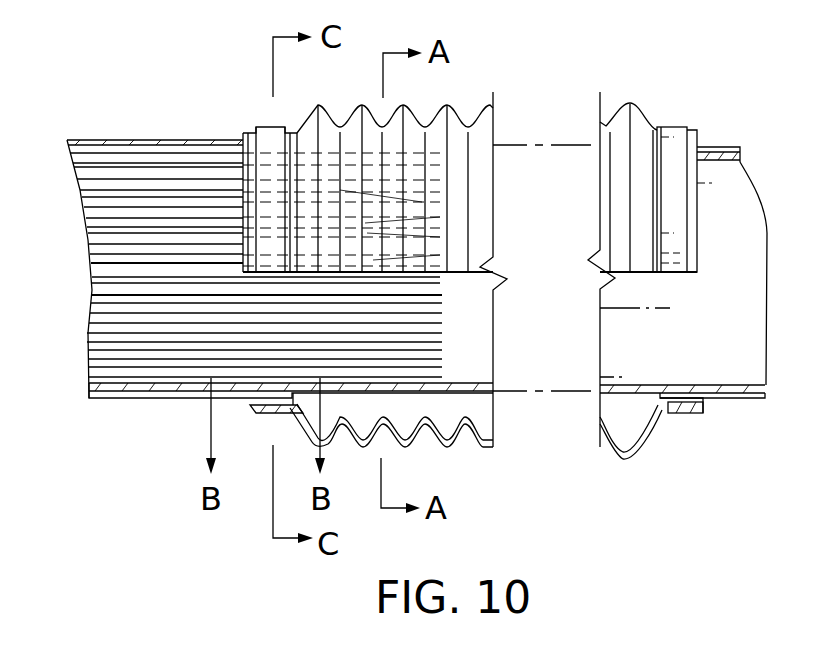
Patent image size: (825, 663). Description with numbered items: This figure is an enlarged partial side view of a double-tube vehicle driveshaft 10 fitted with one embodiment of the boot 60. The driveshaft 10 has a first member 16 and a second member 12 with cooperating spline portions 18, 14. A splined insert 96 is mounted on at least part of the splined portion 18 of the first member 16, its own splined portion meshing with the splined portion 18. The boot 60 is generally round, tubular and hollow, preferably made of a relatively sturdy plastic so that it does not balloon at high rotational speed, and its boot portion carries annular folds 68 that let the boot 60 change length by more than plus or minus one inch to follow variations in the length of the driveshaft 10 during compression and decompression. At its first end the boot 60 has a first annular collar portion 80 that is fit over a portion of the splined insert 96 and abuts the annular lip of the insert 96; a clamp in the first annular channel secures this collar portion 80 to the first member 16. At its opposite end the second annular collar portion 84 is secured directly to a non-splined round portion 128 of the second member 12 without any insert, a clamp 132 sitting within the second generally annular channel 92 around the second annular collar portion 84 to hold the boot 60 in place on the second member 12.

The driveshaft 10 is at (146, 102).
The second member 12 is at (735, 400).
The spline portion 14 is at (430, 360).
The first member 16 is at (140, 402).
The spline portion 18 is at (118, 332).
The boot 60 is at (643, 91).
The annular folds 68 is at (317, 104).
The first annular collar portion 80 is at (273, 413).
The second annular collar portion 84 is at (672, 213).
The second generally annular channel 92 is at (698, 416).
The splined insert 96 is at (252, 408).
The non-splined round portion 128 is at (698, 147).
The clamp 132 is at (680, 417).